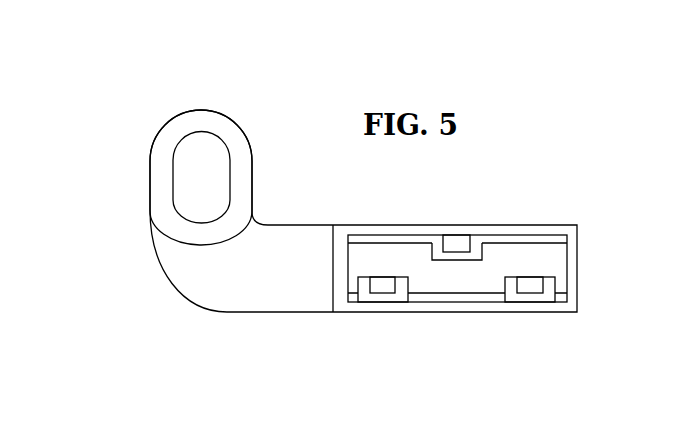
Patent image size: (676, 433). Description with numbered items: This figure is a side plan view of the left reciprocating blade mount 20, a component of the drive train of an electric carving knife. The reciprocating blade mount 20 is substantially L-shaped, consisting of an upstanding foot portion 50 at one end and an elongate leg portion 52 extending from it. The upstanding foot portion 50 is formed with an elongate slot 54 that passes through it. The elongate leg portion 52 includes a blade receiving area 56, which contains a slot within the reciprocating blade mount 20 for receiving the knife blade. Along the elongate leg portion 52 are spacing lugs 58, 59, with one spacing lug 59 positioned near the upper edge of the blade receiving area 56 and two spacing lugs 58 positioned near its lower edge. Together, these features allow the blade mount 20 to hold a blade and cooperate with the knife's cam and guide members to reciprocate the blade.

The reciprocating blade mount 20 is at (510, 145).
The upstanding foot portion 50 is at (252, 152).
The elongate leg portion 52 is at (348, 313).
The elongate slot 54 is at (175, 172).
The blade receiving area 56 is at (537, 240).
The spacing lug 58 is at (383, 283).
The spacing lug 59 is at (458, 243).